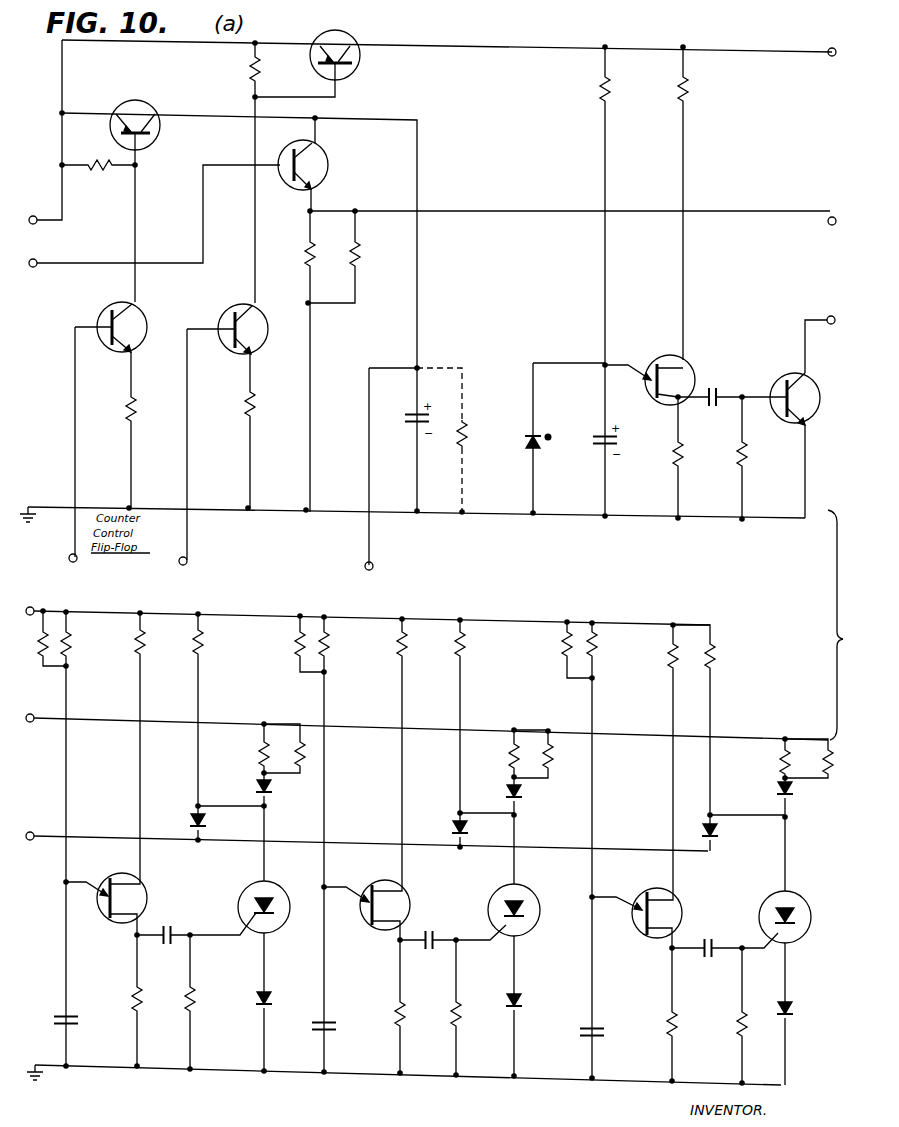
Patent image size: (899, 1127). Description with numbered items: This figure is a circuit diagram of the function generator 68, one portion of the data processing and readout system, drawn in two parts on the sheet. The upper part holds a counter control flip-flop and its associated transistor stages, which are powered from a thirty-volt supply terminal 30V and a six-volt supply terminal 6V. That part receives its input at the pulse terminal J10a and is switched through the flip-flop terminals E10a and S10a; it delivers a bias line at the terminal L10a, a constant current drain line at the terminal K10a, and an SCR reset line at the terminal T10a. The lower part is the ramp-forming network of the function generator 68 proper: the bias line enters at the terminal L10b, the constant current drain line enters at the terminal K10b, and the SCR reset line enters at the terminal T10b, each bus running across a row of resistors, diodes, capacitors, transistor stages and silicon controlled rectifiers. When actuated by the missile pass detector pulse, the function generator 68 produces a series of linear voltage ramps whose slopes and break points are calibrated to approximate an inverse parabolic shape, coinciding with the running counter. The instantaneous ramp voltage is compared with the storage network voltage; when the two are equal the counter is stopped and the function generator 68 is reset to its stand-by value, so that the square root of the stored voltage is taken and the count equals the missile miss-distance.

The function generator 68 is at (424, 858).
The bias output terminal L10a is at (791, 60).
The constant current drain terminal K10a is at (769, 237).
The SCR reset terminal T10a is at (781, 335).
The terminal to E12 E10a is at (64, 449).
The terminal to S12 S10a is at (207, 450).
The pulse input terminal J10a is at (420, 471).
The bias input terminal L10b is at (32, 616).
The constant current drain input K10b is at (36, 725).
The SCR reset input T10b is at (35, 842).
The +30V supply terminal 30V is at (37, 212).
The +6V supply terminal 6V is at (36, 255).